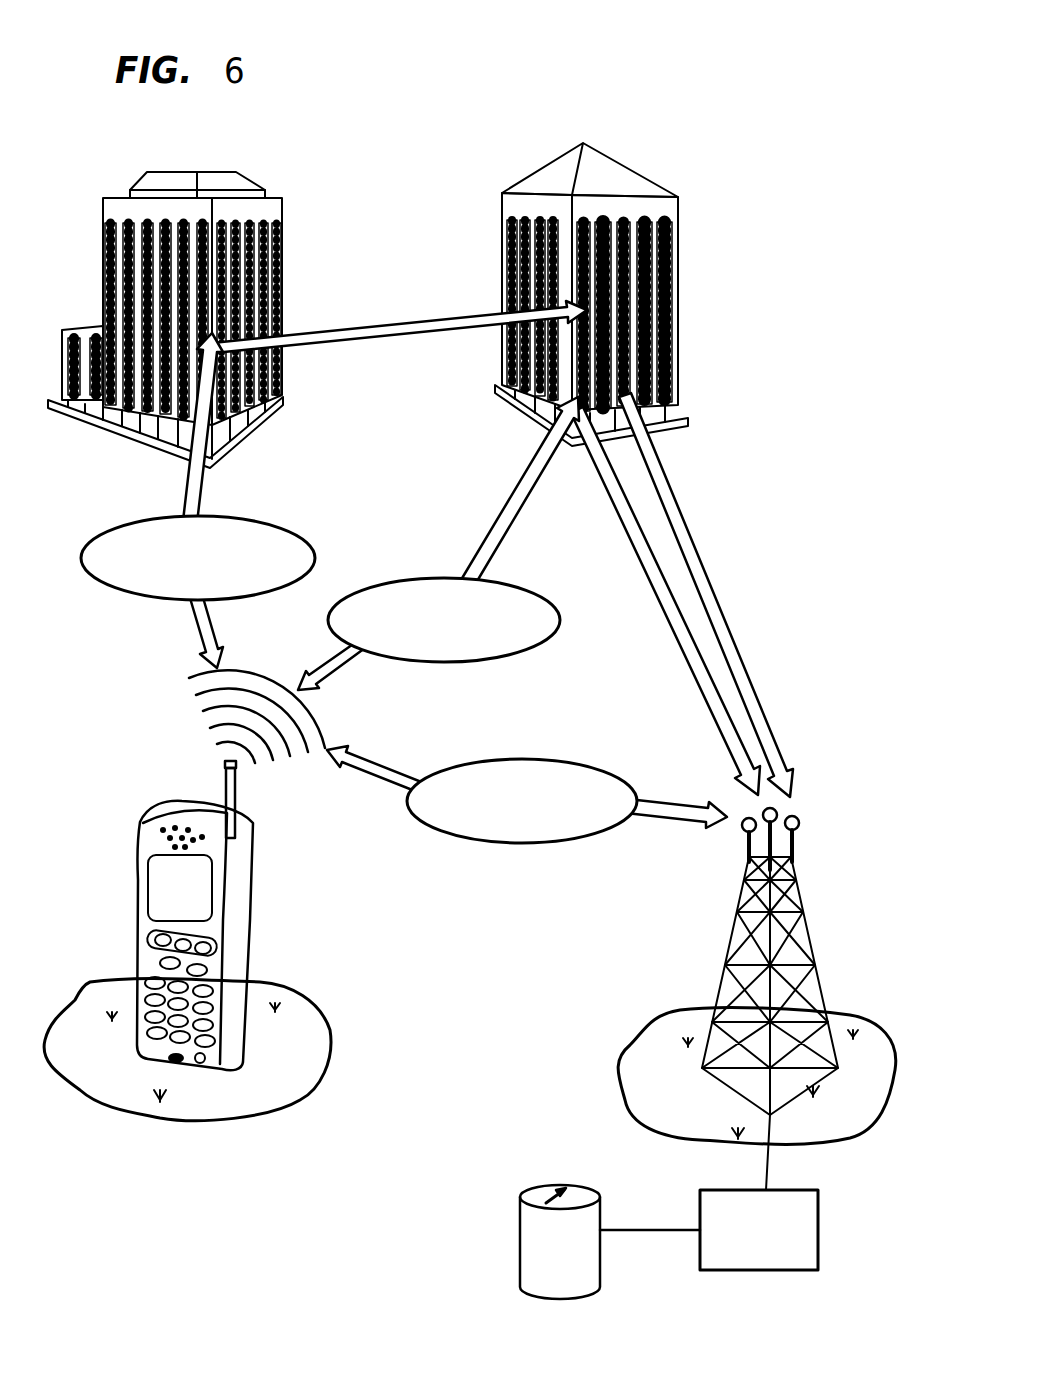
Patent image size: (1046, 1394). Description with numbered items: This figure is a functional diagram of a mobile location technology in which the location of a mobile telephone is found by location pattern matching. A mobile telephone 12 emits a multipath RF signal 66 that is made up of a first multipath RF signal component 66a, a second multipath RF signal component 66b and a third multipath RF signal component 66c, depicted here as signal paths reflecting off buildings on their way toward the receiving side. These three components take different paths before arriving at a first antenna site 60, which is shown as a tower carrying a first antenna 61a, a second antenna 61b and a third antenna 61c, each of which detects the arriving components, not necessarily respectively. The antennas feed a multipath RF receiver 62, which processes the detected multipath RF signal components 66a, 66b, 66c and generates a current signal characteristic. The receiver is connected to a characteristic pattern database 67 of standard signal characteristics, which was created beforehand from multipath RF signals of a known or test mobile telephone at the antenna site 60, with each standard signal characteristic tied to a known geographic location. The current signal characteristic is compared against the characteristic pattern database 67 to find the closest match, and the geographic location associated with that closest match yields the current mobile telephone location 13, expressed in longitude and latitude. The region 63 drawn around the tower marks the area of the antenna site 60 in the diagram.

The mobile telephone 12 is at (248, 895).
The current mobile telephone location 13 is at (325, 994).
The first antenna site 60 is at (810, 870).
The first antenna 61a is at (745, 829).
The second antenna 61b is at (765, 812).
The third antenna 61c is at (798, 818).
The multipath RF receiver 62 is at (748, 1272).
The location of receiving tower 63 is at (608, 1059).
The multipath RF signal 66 is at (262, 684).
The first multipath RF signal component 66a is at (197, 622).
The second multipath RF signal component 66b is at (511, 494).
The third multipath RF signal component 66c is at (389, 763).
The characteristic pattern database 67 is at (563, 1186).